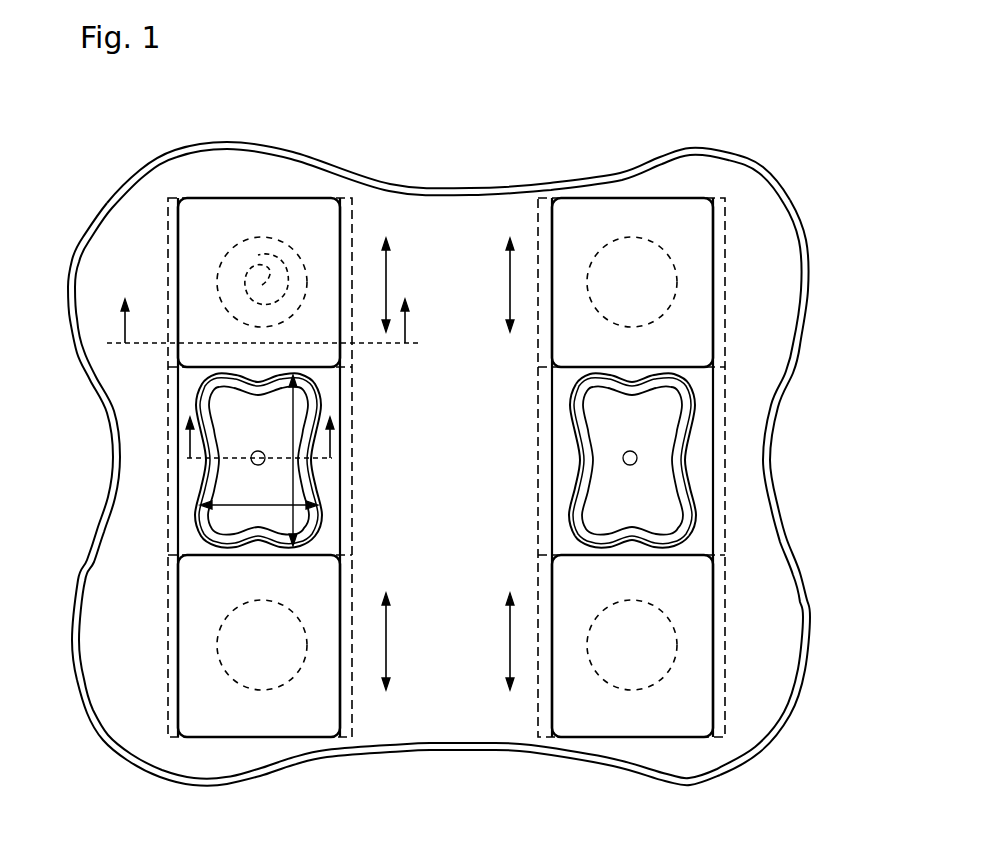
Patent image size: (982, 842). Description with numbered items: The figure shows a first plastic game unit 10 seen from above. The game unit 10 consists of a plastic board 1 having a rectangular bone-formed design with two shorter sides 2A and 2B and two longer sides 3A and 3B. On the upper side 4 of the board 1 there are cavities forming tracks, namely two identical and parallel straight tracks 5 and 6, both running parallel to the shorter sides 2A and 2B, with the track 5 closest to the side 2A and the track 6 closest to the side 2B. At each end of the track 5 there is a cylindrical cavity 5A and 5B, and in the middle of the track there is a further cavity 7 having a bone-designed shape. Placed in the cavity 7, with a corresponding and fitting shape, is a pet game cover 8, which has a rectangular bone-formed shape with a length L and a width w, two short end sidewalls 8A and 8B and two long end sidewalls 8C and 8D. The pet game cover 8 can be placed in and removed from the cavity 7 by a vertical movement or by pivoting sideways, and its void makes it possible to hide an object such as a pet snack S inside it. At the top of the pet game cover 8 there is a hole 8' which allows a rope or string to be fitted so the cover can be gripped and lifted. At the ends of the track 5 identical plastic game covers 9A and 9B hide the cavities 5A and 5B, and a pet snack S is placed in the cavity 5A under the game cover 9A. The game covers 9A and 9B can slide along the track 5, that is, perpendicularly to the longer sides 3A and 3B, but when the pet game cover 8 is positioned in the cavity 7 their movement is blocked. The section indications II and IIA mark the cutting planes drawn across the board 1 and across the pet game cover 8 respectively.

The plastic board 1 is at (420, 184).
The first plastic game unit 10 is at (458, 134).
The shorter side 2A is at (72, 677).
The shorter side 2B is at (807, 680).
The longer side 3A is at (658, 782).
The longer side 3B is at (693, 145).
The upper side 4 is at (770, 237).
The straight track 5 is at (330, 533).
The straight track 6 is at (563, 533).
The cylindrical cavity 5A is at (222, 267).
The cylindrical cavity 5B is at (217, 638).
The cavity 7 is at (200, 493).
The pet game cover 8 is at (447, 461).
The short end sidewall 8A is at (638, 375).
The short end sidewall 8B is at (627, 546).
The long end sidewall 8C is at (684, 452).
The long end sidewall 8D is at (578, 453).
The hole 8' is at (739, 425).
The plastic game cover 9A is at (223, 215).
The plastic game cover 9B is at (213, 688).
The pet snack S is at (270, 282).
The length L is at (293, 512).
The width w is at (259, 494).
The section line II is at (263, 305).
The section line IIA is at (266, 423).